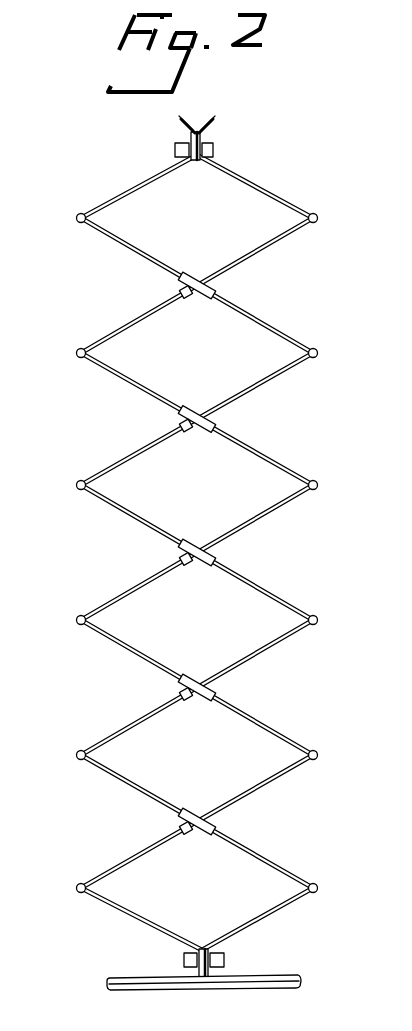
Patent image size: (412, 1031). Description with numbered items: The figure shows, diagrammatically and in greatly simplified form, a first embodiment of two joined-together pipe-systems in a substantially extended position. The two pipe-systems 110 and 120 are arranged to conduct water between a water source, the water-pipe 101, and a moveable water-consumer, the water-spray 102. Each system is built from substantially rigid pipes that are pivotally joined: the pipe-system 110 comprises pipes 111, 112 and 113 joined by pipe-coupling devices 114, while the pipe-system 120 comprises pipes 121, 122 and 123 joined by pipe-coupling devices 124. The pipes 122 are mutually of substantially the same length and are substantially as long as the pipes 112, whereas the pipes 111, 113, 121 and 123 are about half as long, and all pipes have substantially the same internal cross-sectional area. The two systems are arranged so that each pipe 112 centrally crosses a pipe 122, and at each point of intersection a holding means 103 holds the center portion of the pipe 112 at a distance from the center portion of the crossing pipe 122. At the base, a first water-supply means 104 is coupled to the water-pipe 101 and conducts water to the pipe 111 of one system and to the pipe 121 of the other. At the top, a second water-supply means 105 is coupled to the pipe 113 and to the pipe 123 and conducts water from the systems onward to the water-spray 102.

The water-pipe 101 is at (138, 992).
The water-spray 102 is at (207, 127).
The holding means 103 is at (194, 298).
The first water-supply means 104 is at (212, 975).
The second water-supply means 105 is at (180, 147).
The pipe-system 110 is at (66, 603).
The pipe 111 is at (140, 921).
The pipe 112 is at (277, 244).
The pipe 113 is at (259, 187).
The pipe-coupling device 114 is at (318, 218).
The pipe-system 120 is at (330, 603).
The pipe 121 is at (271, 918).
The pipe 122 is at (137, 258).
The pipe 123 is at (136, 187).
The pipe-coupling device 124 is at (74, 218).